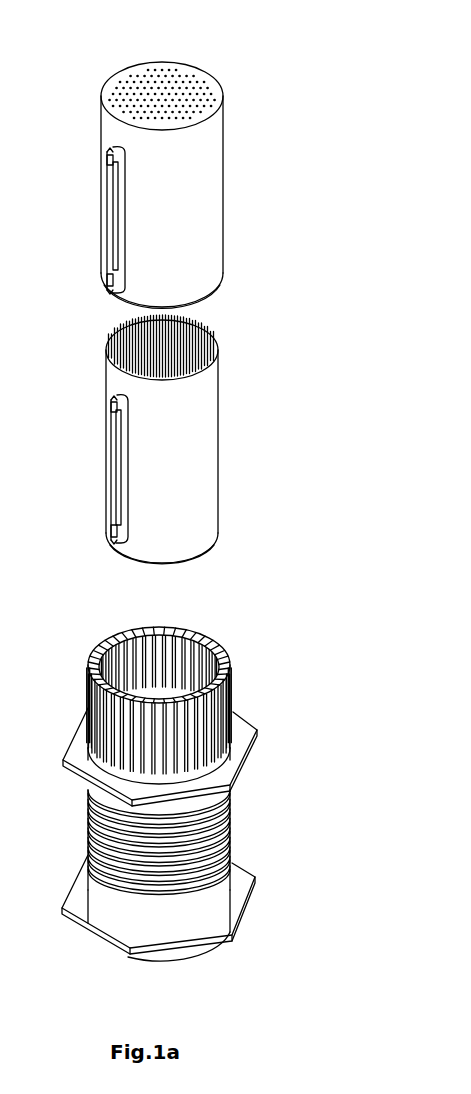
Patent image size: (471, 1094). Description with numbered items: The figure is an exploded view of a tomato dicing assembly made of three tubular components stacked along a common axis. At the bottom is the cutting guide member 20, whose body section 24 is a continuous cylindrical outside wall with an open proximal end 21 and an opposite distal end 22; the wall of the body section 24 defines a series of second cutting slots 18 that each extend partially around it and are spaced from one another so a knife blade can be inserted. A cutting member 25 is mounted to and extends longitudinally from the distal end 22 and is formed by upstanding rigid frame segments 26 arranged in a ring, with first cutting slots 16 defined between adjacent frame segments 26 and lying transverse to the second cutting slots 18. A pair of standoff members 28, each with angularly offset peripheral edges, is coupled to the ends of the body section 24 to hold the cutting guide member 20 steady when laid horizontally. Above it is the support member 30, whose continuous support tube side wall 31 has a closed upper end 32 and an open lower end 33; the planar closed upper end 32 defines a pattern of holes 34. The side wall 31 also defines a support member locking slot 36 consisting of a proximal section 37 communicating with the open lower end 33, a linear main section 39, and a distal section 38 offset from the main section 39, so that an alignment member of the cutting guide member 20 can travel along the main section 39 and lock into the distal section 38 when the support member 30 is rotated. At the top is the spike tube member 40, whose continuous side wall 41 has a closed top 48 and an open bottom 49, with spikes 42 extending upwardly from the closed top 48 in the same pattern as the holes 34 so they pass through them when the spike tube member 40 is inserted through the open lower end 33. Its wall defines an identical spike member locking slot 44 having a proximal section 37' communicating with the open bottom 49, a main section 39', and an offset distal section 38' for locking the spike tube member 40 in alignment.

The first cutting slots 16 is at (200, 655).
The second cutting slots 18 is at (220, 832).
The cutting guide member 20 is at (335, 718).
The open proximal end 21 is at (196, 957).
The distal end 22 is at (122, 773).
The body section 24 is at (108, 903).
The cutting member 25 is at (263, 688).
The frame segments 26 is at (141, 640).
The standoff members 28 is at (245, 735).
The support member 30 is at (270, 225).
The continuous support tube side wall 31 is at (197, 192).
The closed upper end 32 is at (210, 86).
The open lower end 33 is at (214, 298).
The holes 34 is at (165, 70).
The support member locking slot 36 is at (150, 173).
The proximal section 37 is at (69, 282).
The distal section 38 is at (68, 164).
The main section 39 is at (70, 216).
The spike tube member 40 is at (254, 459).
The continuous side wall 41 is at (193, 513).
The spikes 42 is at (203, 341).
The spike member locking slot 44 is at (153, 439).
The closed top 48 is at (213, 358).
The open bottom 49 is at (200, 557).
The proximal section 37' is at (72, 530).
The distal section 38' is at (70, 410).
The main section 39' is at (74, 467).